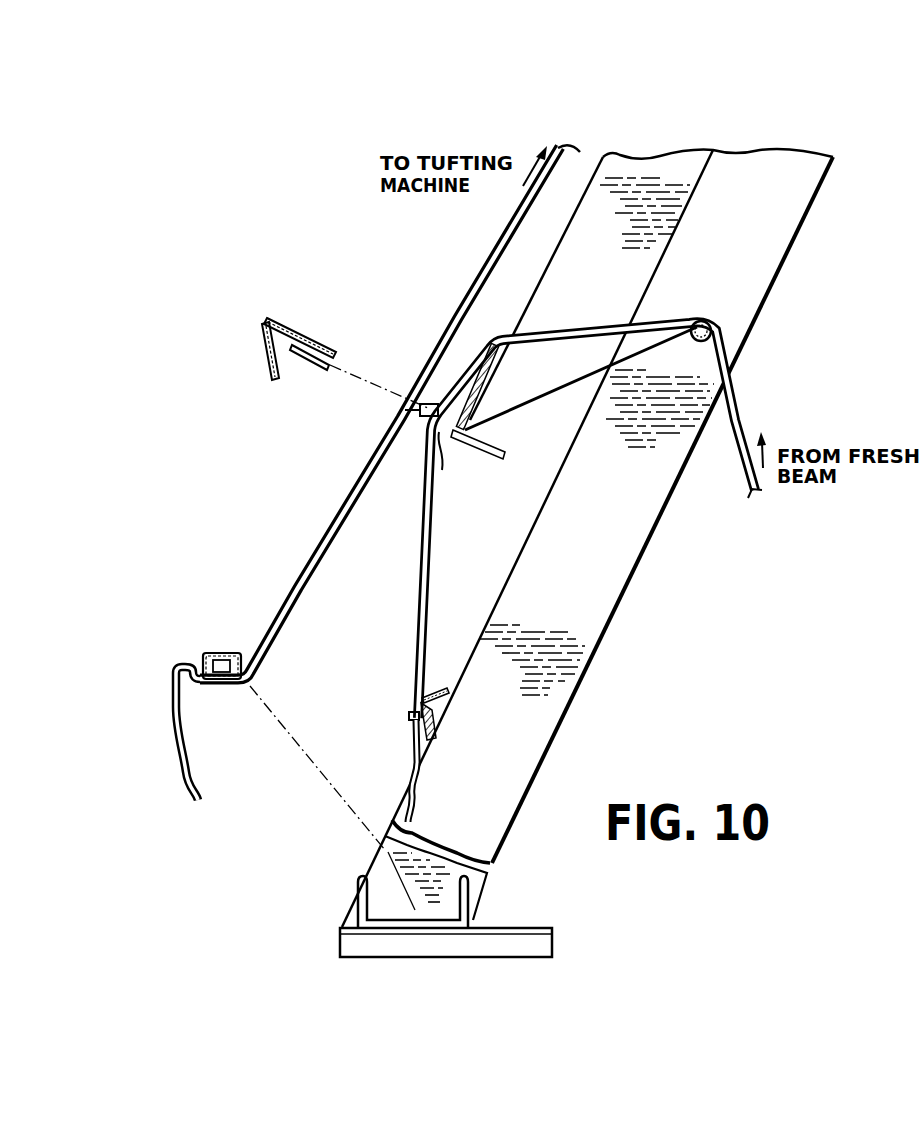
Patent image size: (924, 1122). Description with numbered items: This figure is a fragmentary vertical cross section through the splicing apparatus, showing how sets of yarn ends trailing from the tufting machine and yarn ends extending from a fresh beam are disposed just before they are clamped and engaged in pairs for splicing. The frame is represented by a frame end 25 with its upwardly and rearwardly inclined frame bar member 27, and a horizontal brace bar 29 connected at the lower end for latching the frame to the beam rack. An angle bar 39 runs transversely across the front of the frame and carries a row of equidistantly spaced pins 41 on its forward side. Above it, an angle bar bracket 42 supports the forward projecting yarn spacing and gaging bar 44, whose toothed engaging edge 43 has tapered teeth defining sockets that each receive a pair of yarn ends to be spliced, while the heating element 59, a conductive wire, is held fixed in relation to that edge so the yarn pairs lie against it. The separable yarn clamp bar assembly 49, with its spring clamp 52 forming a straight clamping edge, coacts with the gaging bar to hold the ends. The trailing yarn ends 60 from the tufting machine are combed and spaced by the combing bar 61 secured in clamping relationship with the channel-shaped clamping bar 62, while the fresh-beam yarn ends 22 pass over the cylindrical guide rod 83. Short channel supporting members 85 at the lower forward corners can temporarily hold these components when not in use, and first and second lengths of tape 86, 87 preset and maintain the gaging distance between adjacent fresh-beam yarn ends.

The yarn ends 22 is at (431, 542).
The frame end 25 is at (808, 240).
The frame bar member 27 is at (648, 160).
The brace bar 29 is at (527, 928).
The angle bar 39 is at (443, 693).
The pins 41 is at (408, 717).
The angle bar bracket 42 is at (500, 452).
The toothed engaging edge 43 is at (405, 410).
The yarn spacing and gaging bar 44 is at (490, 397).
The yarn clamp bar assembly 49 is at (266, 362).
The spring clamp 52 is at (345, 353).
The heating element 59 is at (457, 461).
The yarn ends 60 is at (320, 572).
The combing bar 61 is at (186, 688).
The clamping bar 62 is at (236, 652).
The guide rod 83 is at (699, 345).
The channel supporting members 85 is at (440, 917).
The first length of tape 86 is at (410, 742).
The second length of tape 87 is at (428, 743).